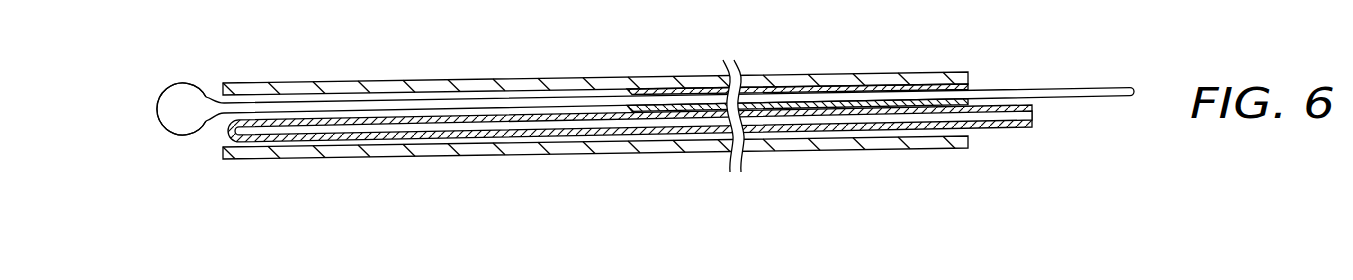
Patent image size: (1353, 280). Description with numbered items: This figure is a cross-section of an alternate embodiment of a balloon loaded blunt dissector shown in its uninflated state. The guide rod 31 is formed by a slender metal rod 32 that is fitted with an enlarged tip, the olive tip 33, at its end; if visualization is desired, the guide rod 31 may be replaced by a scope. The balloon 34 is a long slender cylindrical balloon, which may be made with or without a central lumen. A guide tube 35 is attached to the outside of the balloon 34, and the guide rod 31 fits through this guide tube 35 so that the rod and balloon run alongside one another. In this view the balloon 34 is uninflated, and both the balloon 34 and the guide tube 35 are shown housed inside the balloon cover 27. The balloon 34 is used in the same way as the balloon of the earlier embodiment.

The balloon cover 27 is at (890, 72).
The guide rod 31 is at (173, 74).
The slender metal rod 32 is at (1078, 89).
The olive tip 33 is at (193, 134).
The balloon 34 is at (998, 128).
The guide tube 35 is at (972, 86).